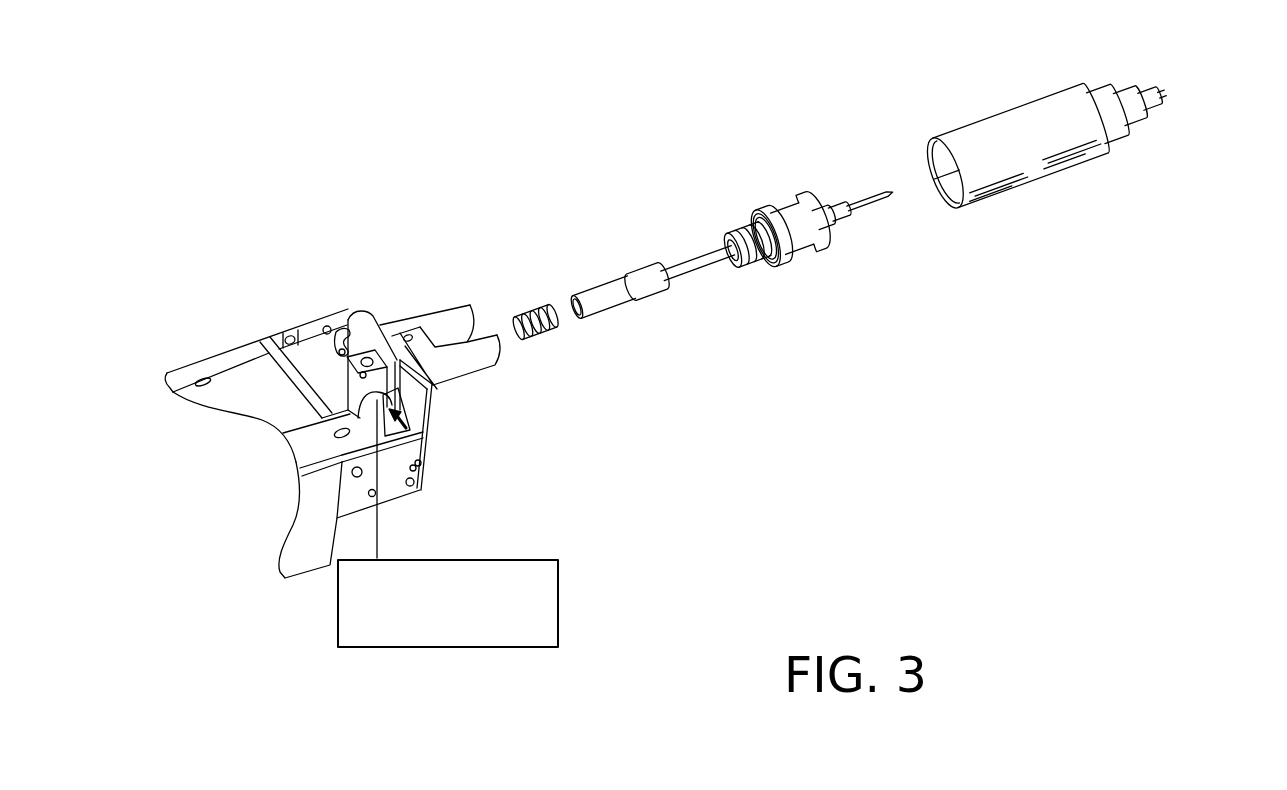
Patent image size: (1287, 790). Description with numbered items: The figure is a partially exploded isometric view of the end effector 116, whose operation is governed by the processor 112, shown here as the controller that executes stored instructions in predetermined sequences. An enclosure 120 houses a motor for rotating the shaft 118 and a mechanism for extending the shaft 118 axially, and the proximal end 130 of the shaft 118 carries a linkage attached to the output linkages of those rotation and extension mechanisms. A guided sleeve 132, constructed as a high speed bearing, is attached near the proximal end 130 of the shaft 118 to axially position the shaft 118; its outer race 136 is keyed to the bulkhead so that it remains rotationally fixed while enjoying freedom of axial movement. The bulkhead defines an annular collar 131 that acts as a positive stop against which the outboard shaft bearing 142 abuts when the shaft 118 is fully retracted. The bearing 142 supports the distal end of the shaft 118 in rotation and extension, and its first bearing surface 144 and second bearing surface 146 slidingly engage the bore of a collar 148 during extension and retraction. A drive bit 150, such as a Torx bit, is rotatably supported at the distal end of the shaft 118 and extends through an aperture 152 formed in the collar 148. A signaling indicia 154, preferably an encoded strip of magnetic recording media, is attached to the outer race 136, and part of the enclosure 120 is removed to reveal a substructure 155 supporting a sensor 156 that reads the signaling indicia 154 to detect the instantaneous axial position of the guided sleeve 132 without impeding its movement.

The processor 112 is at (528, 558).
The end effector 116 is at (376, 191).
The shaft 118 is at (740, 277).
The enclosure 120 is at (228, 360).
The proximal end 130 is at (615, 330).
The annular collar 131 is at (453, 303).
The guided sleeve 132 is at (599, 268).
The outer race 136 is at (643, 263).
The outboard shaft bearing 142 is at (790, 193).
The first bearing surface 144 is at (773, 203).
The second bearing surface 146 is at (810, 187).
The collar 148 is at (1027, 102).
The drive bit 150 is at (890, 190).
The aperture 152 is at (1163, 100).
The signaling indicia 154 is at (650, 290).
The substructure 155 is at (367, 356).
The sensor 156 is at (408, 430).